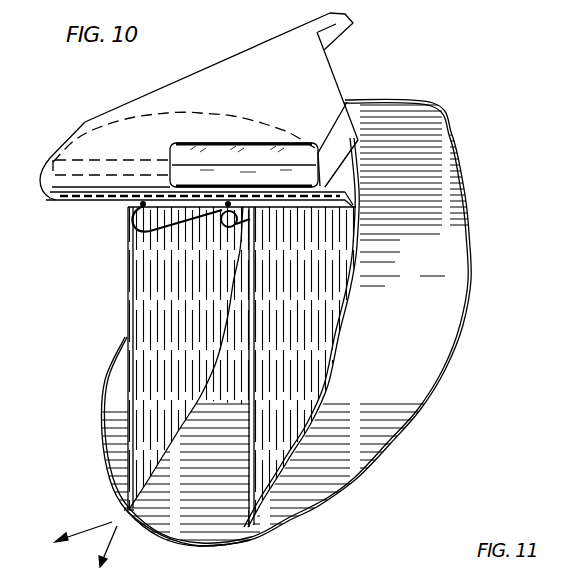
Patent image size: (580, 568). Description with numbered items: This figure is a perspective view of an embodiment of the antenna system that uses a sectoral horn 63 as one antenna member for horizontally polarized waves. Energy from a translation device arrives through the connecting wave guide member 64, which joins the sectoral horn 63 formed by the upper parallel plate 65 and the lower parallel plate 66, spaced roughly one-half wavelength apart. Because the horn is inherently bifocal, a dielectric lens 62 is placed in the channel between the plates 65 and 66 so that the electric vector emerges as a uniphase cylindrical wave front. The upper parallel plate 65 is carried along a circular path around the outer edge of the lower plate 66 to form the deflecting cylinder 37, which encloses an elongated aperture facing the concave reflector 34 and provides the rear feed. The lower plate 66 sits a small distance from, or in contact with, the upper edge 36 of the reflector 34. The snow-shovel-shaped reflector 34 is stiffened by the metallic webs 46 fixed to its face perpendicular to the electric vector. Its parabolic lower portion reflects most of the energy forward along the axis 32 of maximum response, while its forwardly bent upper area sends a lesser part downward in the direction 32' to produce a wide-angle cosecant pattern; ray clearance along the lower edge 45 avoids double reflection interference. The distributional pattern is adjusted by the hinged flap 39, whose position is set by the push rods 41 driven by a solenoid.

The direction of maximum response 32 is at (83, 528).
The downward direction 32' is at (114, 546).
The concave reflector 34 is at (453, 272).
The edge of the reflector 36 is at (412, 93).
The deflecting cylinder 37 is at (38, 180).
The hinged flap 39 is at (340, 201).
The push rods 41 is at (185, 225).
The lower edge 45 is at (174, 544).
The metallic webs 46 is at (252, 386).
The dielectric lens 62 is at (198, 130).
The sectoral horn 63 is at (203, 77).
The connecting wave guide member 64 is at (341, 30).
The upper parallel plate 65 is at (337, 127).
The lower parallel plate 66 is at (361, 143).